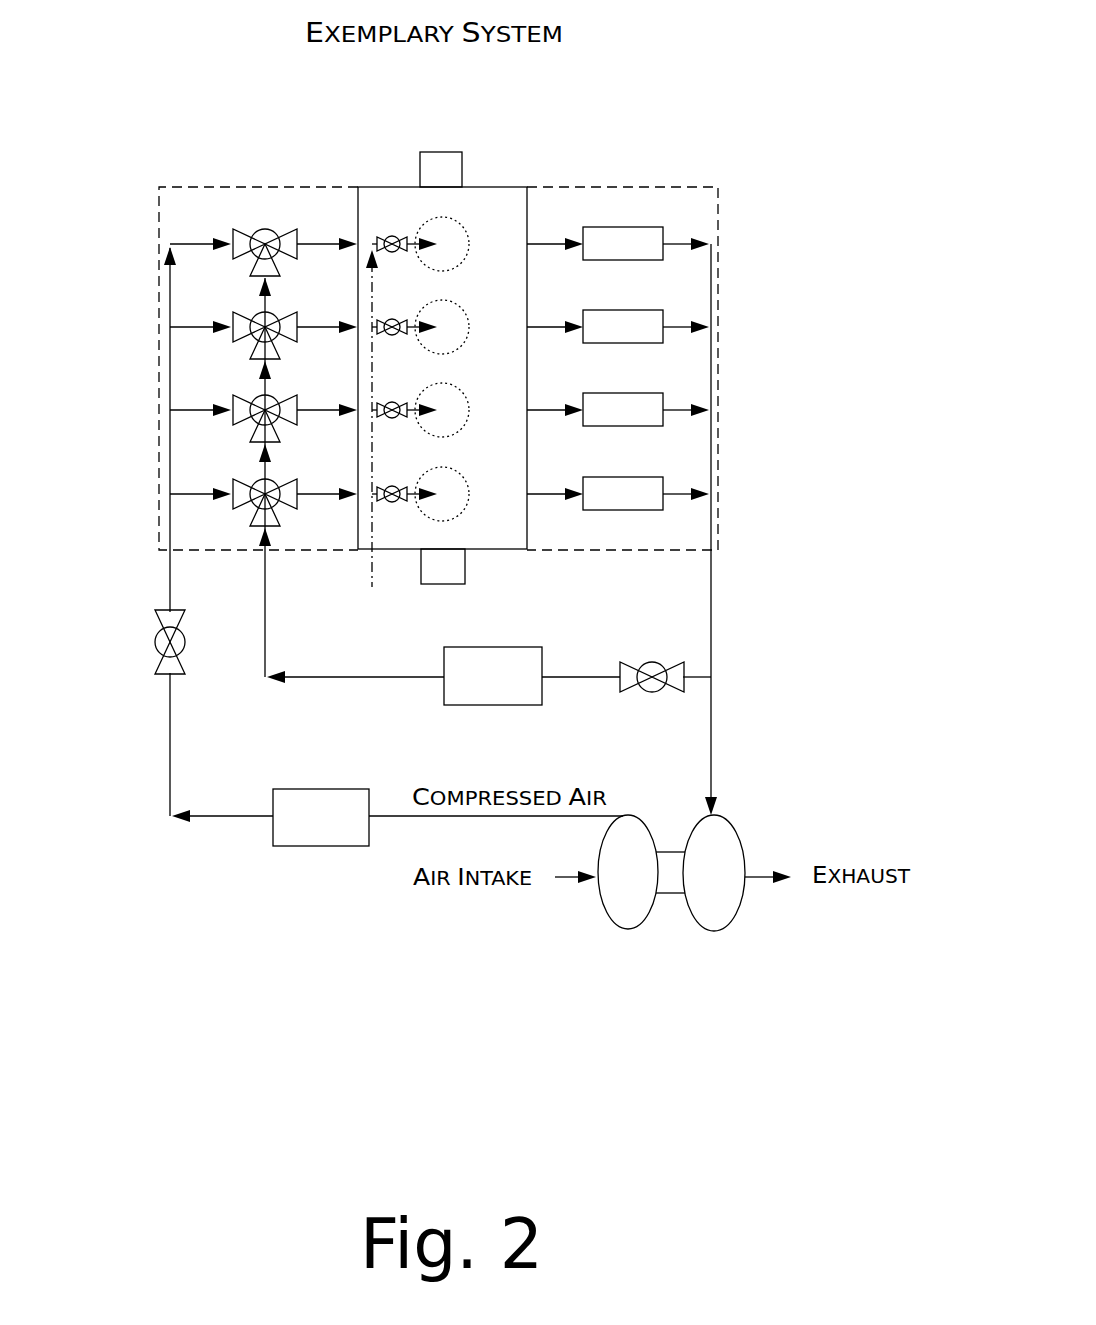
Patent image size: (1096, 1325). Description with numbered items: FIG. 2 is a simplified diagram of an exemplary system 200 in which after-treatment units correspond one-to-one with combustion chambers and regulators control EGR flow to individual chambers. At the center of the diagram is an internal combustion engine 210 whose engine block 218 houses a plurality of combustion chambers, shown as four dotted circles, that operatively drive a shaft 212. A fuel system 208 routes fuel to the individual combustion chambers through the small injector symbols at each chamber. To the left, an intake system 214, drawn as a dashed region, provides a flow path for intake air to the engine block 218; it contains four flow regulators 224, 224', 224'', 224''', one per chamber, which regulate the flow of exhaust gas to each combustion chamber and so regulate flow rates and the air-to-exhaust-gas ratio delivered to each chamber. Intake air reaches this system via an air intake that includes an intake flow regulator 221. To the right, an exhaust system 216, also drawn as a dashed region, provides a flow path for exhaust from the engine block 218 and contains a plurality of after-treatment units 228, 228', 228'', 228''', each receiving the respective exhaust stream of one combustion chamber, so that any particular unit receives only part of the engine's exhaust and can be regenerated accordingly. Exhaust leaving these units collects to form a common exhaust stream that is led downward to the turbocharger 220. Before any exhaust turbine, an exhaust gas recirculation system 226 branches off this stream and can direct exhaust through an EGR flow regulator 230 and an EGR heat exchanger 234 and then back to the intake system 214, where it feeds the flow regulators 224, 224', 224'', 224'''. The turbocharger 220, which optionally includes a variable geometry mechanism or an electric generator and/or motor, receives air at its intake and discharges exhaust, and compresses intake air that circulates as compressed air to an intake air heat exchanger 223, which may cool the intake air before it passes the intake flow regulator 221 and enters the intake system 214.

The exemplary system 200 is at (632, 95).
The fuel system 208 is at (396, 652).
The internal combustion engine 210 is at (398, 185).
The shaft 212 is at (441, 150).
The intake system 214 is at (218, 185).
The exhaust system 216 is at (617, 185).
The engine block 218 is at (512, 297).
The turbocharger 220 is at (694, 886).
The intake flow regulator 221 is at (156, 637).
The intake air heat exchanger 223 is at (344, 829).
The flow regulator 224 is at (241, 237).
The flow regulator 224' is at (238, 319).
The flow regulator 224'' is at (237, 403).
The flow regulator 224''' is at (237, 485).
The exhaust gas recirculation (EGR) system 226 is at (396, 752).
The after-treatment unit 228 is at (623, 243).
The after-treatment unit 228' is at (623, 326).
The after-treatment unit 228'' is at (623, 409).
The after-treatment unit 228''' is at (623, 493).
The EGR flow regulator 230 is at (645, 664).
The EGR heat exchanger 234 is at (516, 689).